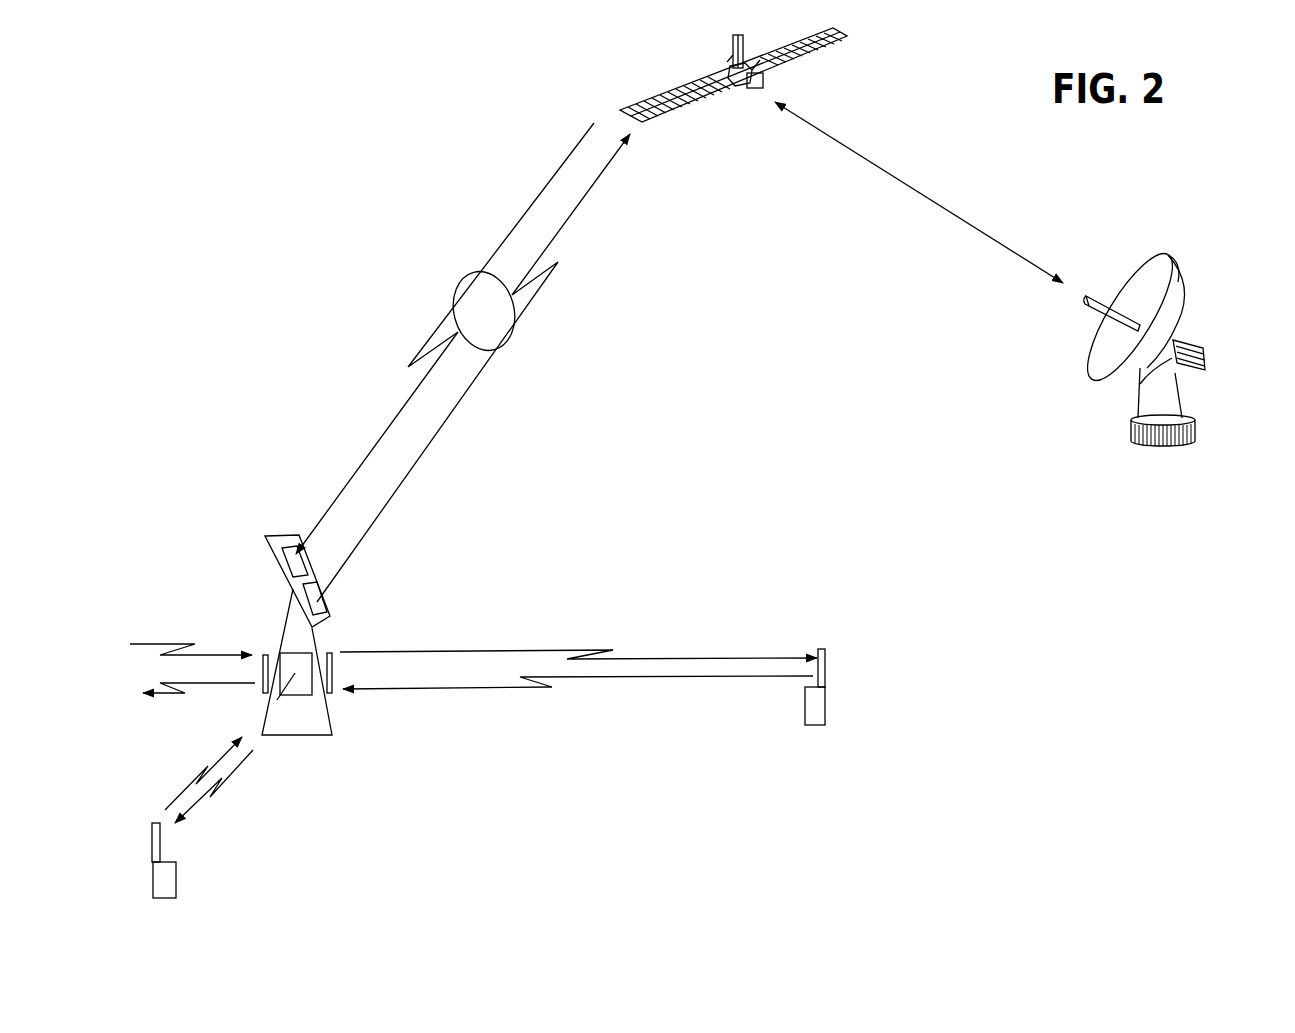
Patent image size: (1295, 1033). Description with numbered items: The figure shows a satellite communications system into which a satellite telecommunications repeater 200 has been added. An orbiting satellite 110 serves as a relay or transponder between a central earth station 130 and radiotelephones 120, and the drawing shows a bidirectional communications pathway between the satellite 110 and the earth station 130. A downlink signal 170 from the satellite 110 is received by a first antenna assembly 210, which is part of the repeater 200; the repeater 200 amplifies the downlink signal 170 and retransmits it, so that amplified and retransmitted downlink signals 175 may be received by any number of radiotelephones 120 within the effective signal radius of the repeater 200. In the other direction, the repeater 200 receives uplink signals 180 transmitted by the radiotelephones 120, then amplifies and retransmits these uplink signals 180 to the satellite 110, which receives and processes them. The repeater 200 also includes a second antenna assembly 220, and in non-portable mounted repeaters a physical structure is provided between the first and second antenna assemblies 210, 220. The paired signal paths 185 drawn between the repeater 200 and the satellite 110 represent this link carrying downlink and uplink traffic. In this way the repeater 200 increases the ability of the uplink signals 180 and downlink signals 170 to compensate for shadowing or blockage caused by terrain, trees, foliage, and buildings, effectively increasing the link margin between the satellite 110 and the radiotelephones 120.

The satellite 110 is at (727, 70).
The radiotelephone 120 is at (838, 630).
The central earth station 130 is at (1182, 403).
The downlink signal 170 is at (452, 311).
The amplified and retransmitted downlink signal 175 is at (453, 650).
The uplink signal 180 is at (467, 689).
The feeder link 185 is at (480, 375).
The satellite telecommunications repeater 200 is at (270, 612).
The first antenna assembly 210 is at (270, 527).
The second antenna assembly 220 is at (312, 703).